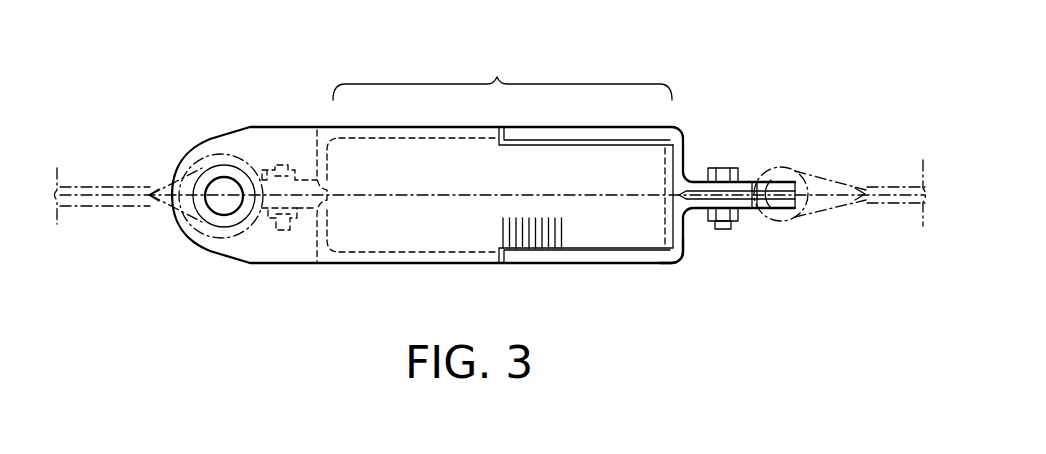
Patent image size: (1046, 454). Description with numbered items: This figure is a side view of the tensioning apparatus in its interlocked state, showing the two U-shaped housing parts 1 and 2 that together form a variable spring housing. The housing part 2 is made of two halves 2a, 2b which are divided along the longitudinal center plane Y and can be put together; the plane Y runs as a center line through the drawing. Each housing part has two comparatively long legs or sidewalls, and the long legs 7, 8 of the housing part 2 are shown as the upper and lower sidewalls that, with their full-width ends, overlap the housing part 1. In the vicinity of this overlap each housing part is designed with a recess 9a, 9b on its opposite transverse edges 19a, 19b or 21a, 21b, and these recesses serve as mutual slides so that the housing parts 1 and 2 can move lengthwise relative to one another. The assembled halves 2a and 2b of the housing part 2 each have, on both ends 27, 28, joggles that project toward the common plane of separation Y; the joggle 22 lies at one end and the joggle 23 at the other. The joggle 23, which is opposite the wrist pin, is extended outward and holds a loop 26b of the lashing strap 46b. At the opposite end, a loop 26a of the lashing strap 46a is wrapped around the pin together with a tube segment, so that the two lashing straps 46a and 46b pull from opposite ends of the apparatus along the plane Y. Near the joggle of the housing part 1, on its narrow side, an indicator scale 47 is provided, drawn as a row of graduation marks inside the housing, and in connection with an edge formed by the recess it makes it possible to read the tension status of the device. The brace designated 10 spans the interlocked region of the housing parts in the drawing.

The housing part 1 is at (467, 187).
The housing part 2 is at (396, 250).
The half of housing part 2a is at (362, 127).
The half of housing part 2b is at (352, 265).
The long leg 7 is at (660, 127).
The long leg 8 is at (655, 266).
The recess 9a is at (597, 141).
The recess 9b is at (586, 266).
The connector unit 10 is at (502, 74).
The transverse edge 19a is at (563, 150).
The transverse edge 19b is at (633, 245).
The transverse edge 21a is at (411, 141).
The transverse edge 21b is at (434, 260).
The joggle 22 is at (306, 162).
The joggle 23 is at (701, 161).
The loop 26a is at (197, 207).
The loop 26b is at (784, 160).
The end 27 is at (295, 244).
The end 28 is at (706, 254).
The lashing strap 46a is at (107, 212).
The lashing strap 46b is at (902, 210).
The indicator scale 47 is at (546, 228).
The longitudinal center plane Y is at (169, 192).